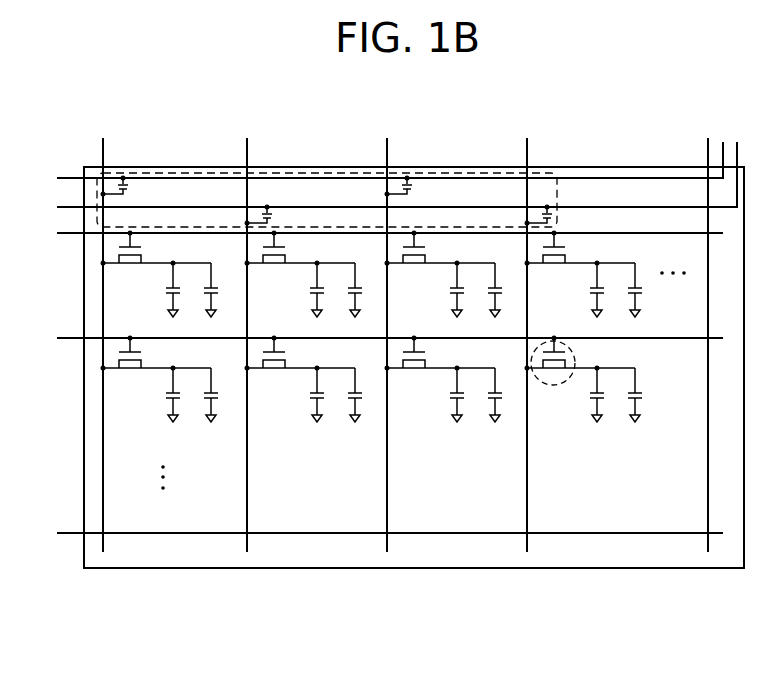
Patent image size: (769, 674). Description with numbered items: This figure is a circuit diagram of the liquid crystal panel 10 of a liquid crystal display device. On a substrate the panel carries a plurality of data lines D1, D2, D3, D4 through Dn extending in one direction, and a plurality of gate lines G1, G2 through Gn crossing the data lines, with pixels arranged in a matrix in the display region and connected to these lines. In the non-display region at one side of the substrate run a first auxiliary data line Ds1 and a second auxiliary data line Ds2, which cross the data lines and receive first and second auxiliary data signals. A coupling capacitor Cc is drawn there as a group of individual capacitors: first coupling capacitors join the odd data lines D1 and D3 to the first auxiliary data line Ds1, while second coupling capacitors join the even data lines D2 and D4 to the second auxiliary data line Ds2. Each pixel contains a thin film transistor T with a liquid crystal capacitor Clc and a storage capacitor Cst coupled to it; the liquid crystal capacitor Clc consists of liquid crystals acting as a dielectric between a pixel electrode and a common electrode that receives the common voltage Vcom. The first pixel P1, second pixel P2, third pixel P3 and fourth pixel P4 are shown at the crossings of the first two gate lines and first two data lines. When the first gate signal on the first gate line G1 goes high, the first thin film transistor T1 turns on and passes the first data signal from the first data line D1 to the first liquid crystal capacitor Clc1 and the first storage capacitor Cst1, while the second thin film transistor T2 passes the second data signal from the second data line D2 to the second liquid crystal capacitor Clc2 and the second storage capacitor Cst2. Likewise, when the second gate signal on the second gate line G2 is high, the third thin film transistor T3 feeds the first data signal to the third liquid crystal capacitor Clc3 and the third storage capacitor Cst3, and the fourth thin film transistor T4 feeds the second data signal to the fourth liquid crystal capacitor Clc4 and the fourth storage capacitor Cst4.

The liquid crystal panel 10 is at (631, 573).
The first data line D1 is at (91, 341).
The second data line D2 is at (234, 341).
The third data line D3 is at (374, 341).
The fourth data line D4 is at (514, 341).
The n-th data line Dn is at (695, 341).
The first auxiliary data line Ds1 is at (373, 166).
The second auxiliary data line Ds2 is at (380, 180).
The first gate line G1 is at (378, 233).
The second gate line G2 is at (378, 338).
The n-th gate line Gn is at (378, 533).
The coupling capacitor Cc is at (556, 186).
The first pixel P1 is at (156, 284).
The second pixel P2 is at (300, 284).
The third pixel P3 is at (156, 390).
The fourth pixel P4 is at (300, 390).
The first thin film transistor T1 is at (130, 258).
The second thin film transistor T2 is at (274, 258).
The third thin film transistor T3 is at (130, 364).
The fourth thin film transistor T4 is at (274, 364).
The first storage capacitor Cst1 is at (184, 290).
The second storage capacitor Cst2 is at (328, 290).
The third storage capacitor Cst3 is at (184, 395).
The fourth storage capacitor Cst4 is at (328, 395).
The first liquid crystal capacitor Clc1 is at (222, 290).
The second liquid crystal capacitor Clc2 is at (364, 290).
The third liquid crystal capacitor Clc3 is at (222, 395).
The fourth liquid crystal capacitor Clc4 is at (364, 395).
The thin film transistor T is at (553, 385).
The storage capacitor Cst is at (612, 391).
The liquid crystal capacitor Clc is at (647, 391).
The common voltage Vcom is at (616, 431).